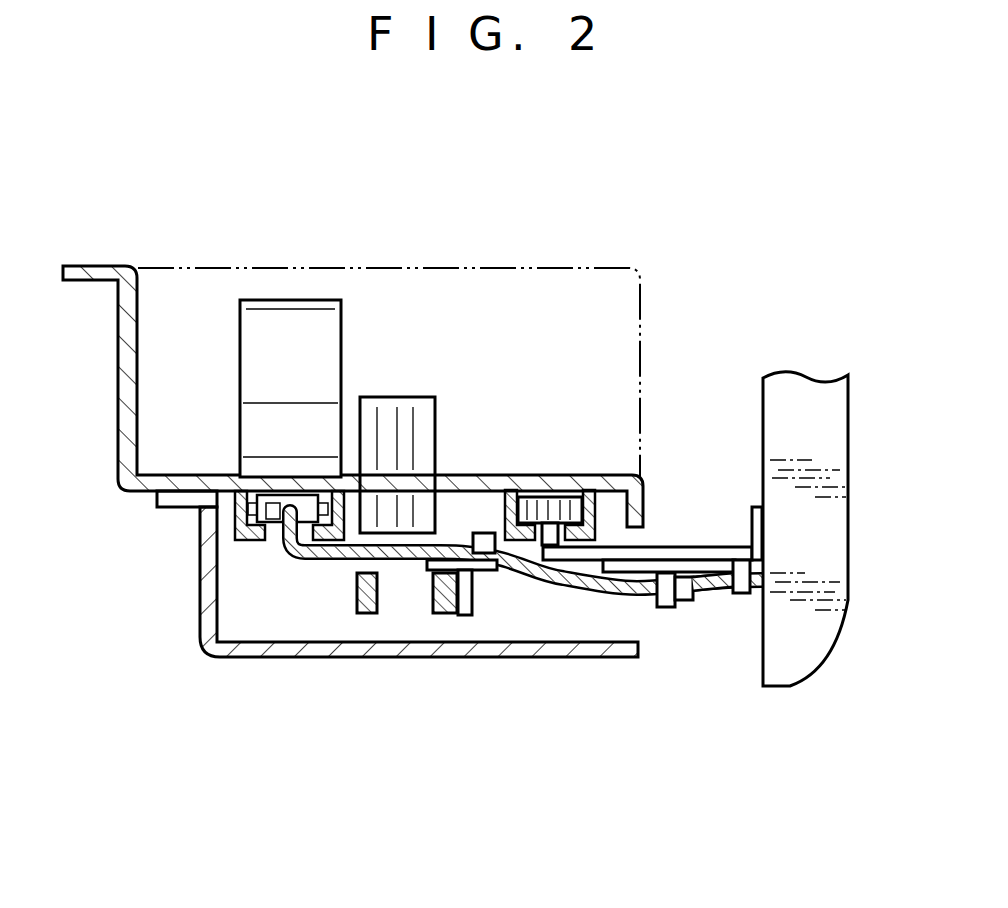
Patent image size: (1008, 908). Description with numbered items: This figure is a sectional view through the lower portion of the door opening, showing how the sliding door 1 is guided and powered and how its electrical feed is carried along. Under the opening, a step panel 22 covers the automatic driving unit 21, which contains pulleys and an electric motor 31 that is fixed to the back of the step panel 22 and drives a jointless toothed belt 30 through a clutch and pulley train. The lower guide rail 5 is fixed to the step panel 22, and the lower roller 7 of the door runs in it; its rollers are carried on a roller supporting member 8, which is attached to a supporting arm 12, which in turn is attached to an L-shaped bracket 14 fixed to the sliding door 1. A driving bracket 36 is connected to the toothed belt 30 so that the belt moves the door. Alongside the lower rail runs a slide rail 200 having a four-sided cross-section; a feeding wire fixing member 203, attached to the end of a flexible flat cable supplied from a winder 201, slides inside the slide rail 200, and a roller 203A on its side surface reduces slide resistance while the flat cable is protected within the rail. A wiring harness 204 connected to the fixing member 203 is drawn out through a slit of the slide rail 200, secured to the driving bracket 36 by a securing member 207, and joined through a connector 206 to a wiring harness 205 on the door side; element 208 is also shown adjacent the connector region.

The sliding door 1 is at (837, 470).
The lower guide rail 5 is at (590, 490).
The lower roller 7 is at (560, 497).
The roller supporting member 8 is at (612, 547).
The supporting arm 12 is at (670, 560).
The L-shaped bracket 14 is at (715, 547).
The automatic driving unit 21 is at (250, 608).
The step panel 22 is at (198, 482).
The jointless toothed belt 30 is at (365, 615).
The electric motor 31 is at (410, 407).
The driving bracket 36 is at (500, 567).
The slide rail 200 is at (343, 423).
The winder 201 is at (307, 327).
The feeding wire fixing member 203 is at (275, 512).
The roller 203A is at (330, 493).
The wiring harness 204 is at (308, 560).
The wiring harness 205 is at (720, 595).
The connector 206 is at (673, 610).
The securing member 207 is at (484, 555).
The fastener 208 is at (740, 595).